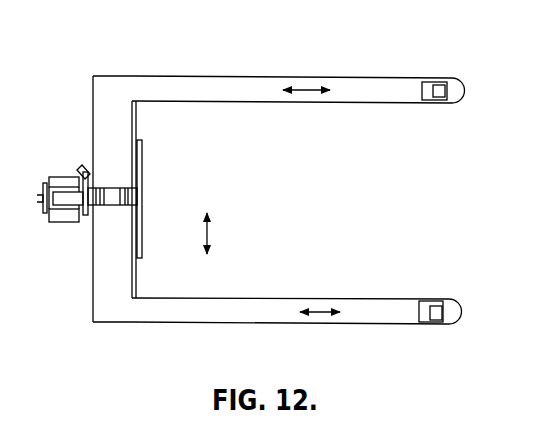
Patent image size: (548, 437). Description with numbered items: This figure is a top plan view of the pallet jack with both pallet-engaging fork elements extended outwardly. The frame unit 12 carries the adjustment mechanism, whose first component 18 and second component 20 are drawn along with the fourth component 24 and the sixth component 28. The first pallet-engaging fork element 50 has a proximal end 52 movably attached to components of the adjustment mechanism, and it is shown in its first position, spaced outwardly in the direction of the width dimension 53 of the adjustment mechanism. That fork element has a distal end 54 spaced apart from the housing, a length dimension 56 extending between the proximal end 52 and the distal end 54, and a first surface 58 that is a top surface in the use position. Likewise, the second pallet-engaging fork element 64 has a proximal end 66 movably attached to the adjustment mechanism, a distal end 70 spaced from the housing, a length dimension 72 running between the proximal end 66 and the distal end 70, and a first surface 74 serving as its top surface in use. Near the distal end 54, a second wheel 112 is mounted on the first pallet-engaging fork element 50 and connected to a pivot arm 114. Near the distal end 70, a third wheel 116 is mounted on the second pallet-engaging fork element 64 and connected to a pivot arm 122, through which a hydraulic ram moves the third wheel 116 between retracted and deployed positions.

The frame unit 12 is at (163, 190).
The first component 18 is at (138, 120).
The second component 20 is at (137, 273).
The fourth component 24 is at (142, 160).
The sixth component 28 is at (145, 220).
The first pallet-engaging fork element 50 is at (250, 88).
The proximal end 52 is at (147, 80).
The width dimension 53 is at (210, 232).
The distal end 54 is at (413, 80).
The length dimension 56 is at (310, 90).
The first surface 58 is at (360, 86).
The second pallet-engaging fork element 64 is at (277, 316).
The proximal end 66 is at (152, 316).
The distal end 70 is at (402, 324).
The length dimension 72 is at (320, 310).
The first surface 74 is at (357, 305).
The second wheel 112 is at (439, 86).
The pivot arm 114 is at (425, 101).
The third wheel 116 is at (436, 315).
The pivot arm 122 is at (422, 306).